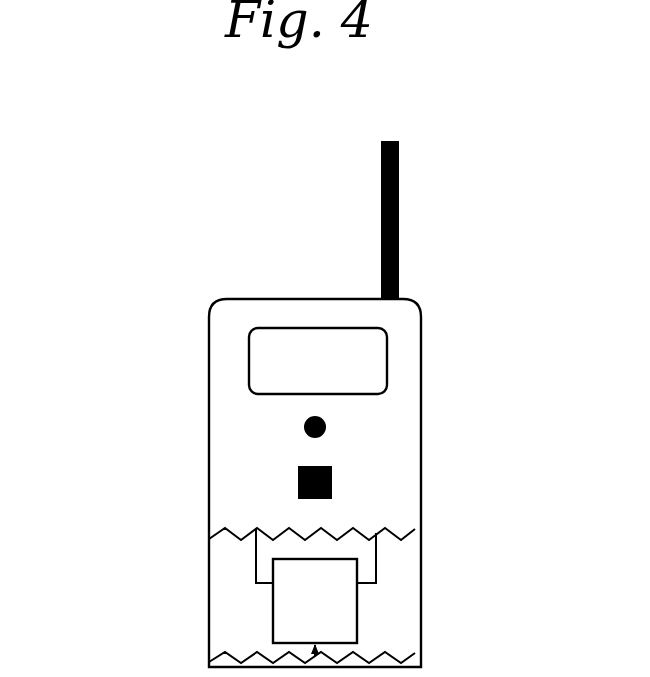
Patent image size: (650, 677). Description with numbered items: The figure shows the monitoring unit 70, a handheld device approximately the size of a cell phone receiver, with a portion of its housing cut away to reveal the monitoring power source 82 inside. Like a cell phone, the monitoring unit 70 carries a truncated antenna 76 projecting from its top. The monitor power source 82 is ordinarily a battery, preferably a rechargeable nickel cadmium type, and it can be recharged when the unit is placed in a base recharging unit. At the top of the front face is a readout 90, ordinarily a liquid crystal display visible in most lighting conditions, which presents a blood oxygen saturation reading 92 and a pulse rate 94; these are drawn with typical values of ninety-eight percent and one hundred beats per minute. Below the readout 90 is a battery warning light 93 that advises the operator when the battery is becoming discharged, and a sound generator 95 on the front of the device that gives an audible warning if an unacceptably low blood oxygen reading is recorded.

The monitoring unit 70 is at (198, 469).
The truncated antenna 76 is at (456, 195).
The monitoring power source 82 is at (387, 592).
The readout 90 is at (383, 331).
The blood oxygen saturation reading 92 is at (224, 290).
The battery warning light 93 is at (414, 395).
The pulse rate 94 is at (231, 354).
The sound generator 95 is at (413, 458).